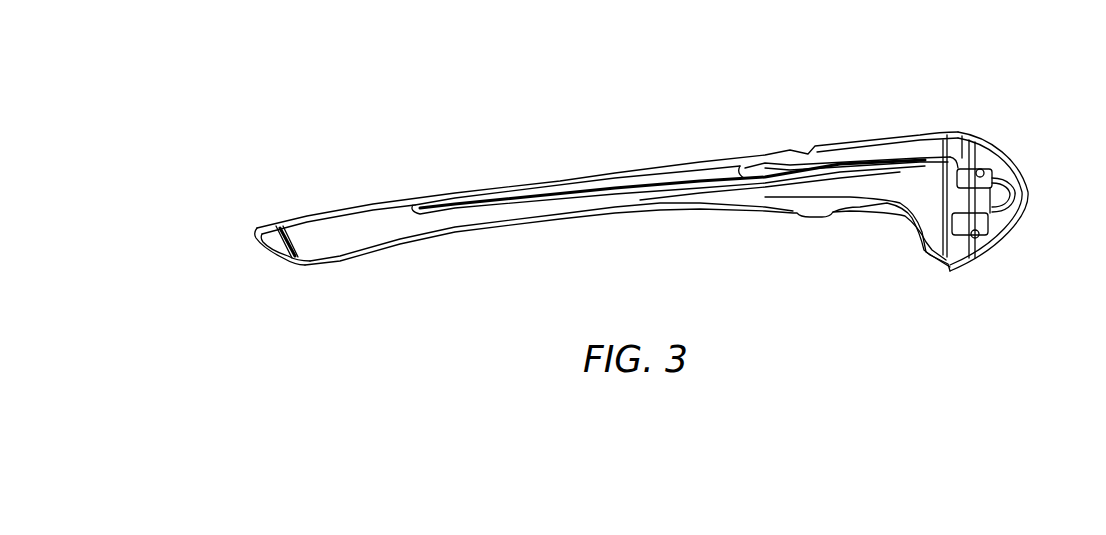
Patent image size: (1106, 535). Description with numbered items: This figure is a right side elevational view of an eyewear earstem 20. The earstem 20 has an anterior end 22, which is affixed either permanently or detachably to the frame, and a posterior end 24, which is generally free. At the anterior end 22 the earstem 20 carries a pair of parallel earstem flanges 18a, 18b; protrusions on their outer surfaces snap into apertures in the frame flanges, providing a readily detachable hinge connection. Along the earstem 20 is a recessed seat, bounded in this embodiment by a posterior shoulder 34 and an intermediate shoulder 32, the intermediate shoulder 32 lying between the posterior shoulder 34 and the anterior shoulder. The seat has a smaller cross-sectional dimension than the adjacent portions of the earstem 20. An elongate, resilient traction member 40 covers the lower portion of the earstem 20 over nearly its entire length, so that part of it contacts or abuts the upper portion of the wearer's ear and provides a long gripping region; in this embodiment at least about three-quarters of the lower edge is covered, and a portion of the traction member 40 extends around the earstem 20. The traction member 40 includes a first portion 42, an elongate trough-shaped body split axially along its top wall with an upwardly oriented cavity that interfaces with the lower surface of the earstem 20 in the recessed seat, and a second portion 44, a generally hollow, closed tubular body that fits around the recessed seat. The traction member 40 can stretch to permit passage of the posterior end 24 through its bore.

The earstem 20 is at (553, 73).
The anterior end 22 is at (937, 286).
The posterior end 24 is at (263, 273).
The intermediate shoulder 32 is at (608, 187).
The posterior shoulder 34 is at (274, 226).
The traction member 40 is at (324, 235).
The first portion 42 is at (748, 220).
The second portion 44 is at (401, 265).
The earstem flange 18a is at (985, 180).
The earstem flange 18b is at (985, 233).